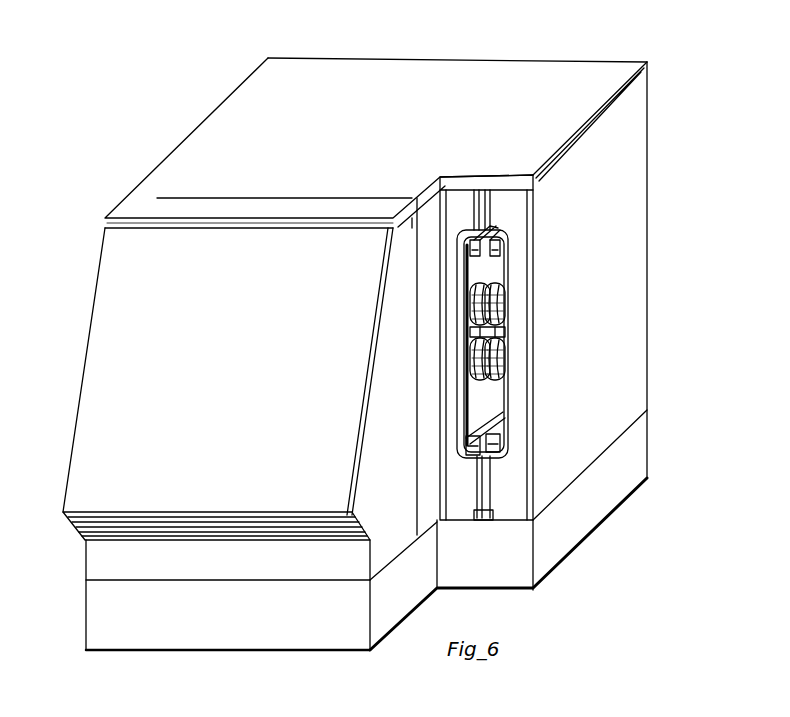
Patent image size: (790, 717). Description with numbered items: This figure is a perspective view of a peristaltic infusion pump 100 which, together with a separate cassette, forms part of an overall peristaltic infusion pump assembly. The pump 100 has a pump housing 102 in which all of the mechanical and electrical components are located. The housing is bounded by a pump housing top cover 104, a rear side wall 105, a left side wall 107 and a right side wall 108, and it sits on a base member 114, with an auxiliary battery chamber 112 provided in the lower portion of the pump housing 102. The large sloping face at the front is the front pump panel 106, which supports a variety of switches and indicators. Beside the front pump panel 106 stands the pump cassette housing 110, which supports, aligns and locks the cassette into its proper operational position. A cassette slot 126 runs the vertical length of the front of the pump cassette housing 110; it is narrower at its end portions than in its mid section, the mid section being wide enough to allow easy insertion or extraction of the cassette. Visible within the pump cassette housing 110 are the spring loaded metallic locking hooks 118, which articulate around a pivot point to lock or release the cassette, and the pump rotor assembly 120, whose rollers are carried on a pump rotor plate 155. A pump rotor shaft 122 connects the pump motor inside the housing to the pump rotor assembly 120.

The peristaltic infusion pump 100 is at (389, 55).
The pump housing 102 is at (405, 505).
The pump housing top cover 104 is at (206, 132).
The rear side wall 105 is at (525, 60).
The front pump panel 106 is at (245, 377).
The left side wall 107 is at (633, 128).
The right side wall 108 is at (93, 286).
The pump cassette housing 110 is at (517, 274).
The auxiliary battery chamber 112 is at (155, 636).
The base member 114 is at (321, 644).
The locking hooks 118 is at (478, 233).
The pump rotor assembly 120 is at (490, 277).
The pump rotor shaft 122 is at (469, 343).
The cassette slot 126 is at (479, 486).
The pump rotor plate 155 is at (498, 332).